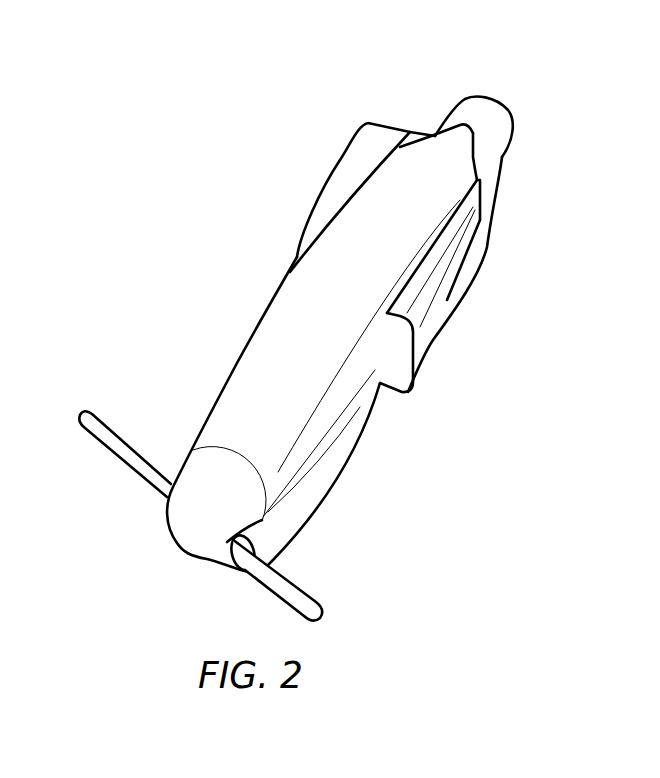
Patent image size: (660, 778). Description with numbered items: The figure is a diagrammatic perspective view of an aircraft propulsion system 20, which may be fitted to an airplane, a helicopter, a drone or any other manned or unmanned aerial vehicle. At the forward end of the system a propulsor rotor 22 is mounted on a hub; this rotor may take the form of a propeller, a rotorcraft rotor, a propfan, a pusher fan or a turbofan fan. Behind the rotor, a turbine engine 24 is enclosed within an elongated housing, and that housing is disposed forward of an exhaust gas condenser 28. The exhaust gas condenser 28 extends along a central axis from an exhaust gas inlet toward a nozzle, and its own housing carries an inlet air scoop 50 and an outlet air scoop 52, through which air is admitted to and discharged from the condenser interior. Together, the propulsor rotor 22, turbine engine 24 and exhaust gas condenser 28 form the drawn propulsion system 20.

The propulsion system 20 is at (143, 98).
The propulsor rotor 22 is at (102, 393).
The turbine engine 24 is at (338, 526).
The exhaust gas condenser 28 is at (474, 298).
The inlet air scoop 50 is at (434, 396).
The outlet air scoop 52 is at (390, 106).